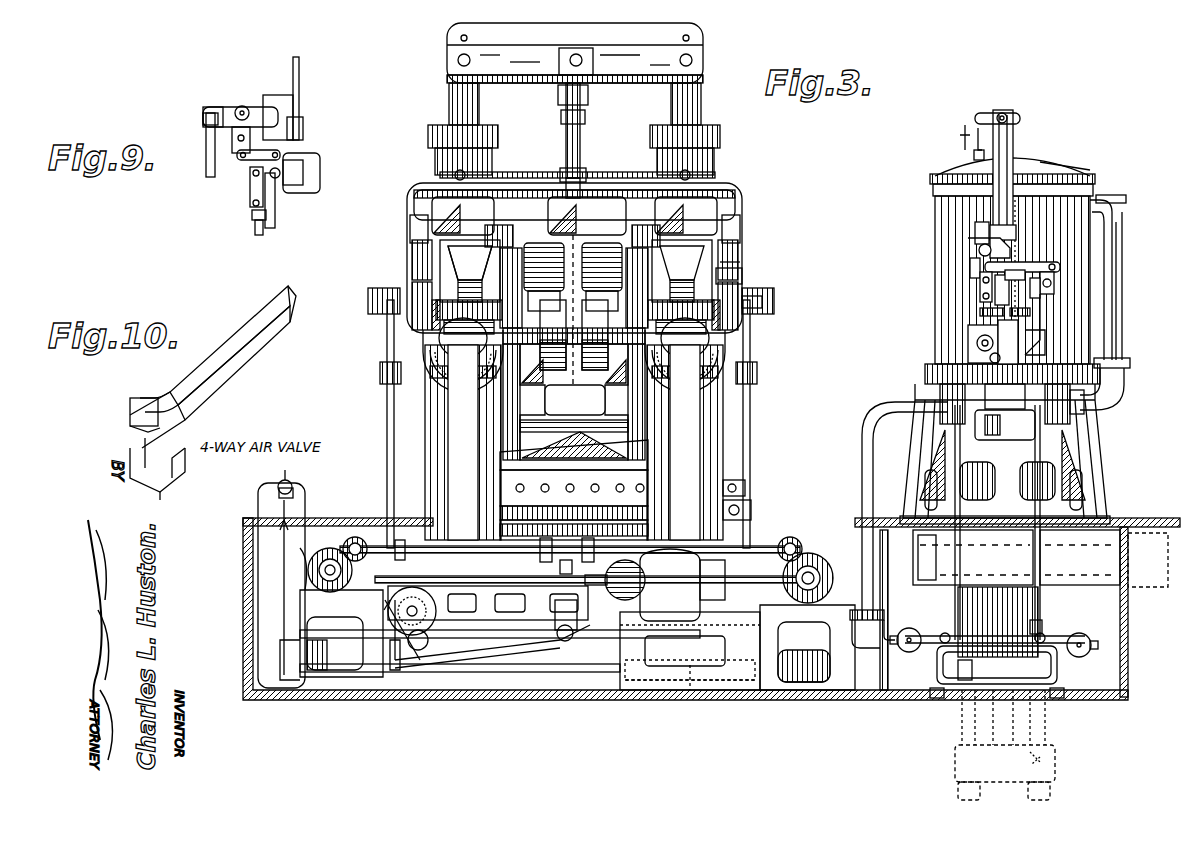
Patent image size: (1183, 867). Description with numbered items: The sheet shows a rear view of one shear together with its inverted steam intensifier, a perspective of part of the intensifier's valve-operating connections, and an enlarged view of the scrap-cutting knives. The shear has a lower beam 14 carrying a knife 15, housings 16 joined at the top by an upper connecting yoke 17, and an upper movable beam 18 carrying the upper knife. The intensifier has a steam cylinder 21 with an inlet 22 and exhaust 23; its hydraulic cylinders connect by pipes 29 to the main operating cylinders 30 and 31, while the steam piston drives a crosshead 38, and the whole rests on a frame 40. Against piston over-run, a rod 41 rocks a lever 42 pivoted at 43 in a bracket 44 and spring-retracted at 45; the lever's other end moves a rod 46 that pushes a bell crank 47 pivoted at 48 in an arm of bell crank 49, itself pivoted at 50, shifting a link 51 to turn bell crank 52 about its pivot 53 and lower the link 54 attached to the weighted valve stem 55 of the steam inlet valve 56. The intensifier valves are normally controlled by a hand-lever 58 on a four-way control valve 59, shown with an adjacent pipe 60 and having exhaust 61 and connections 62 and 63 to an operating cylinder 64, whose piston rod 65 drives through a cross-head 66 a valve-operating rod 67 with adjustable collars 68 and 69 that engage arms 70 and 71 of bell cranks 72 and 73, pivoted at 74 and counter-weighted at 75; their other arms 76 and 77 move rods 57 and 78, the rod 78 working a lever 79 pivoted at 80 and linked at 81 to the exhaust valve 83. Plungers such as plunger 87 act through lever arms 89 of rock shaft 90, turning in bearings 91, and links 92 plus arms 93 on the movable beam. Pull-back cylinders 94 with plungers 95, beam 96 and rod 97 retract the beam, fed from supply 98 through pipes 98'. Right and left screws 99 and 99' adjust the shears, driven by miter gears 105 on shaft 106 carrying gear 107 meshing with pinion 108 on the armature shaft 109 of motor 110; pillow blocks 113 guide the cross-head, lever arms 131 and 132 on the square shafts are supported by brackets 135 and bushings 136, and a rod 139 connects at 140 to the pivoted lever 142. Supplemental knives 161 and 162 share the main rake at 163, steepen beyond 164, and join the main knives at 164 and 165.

In FIG. 3, the lower beam 14 is at (574, 494).
In FIG. 10, the knife 15 is at (222, 406).
In FIG. 3, the housings 16 is at (574, 442).
In FIG. 3, the upper connecting yoke 17 is at (742, 205).
In FIG. 3, the upper movable beam 18 is at (574, 394).
In FIG. 3, the steam cylinder 21 is at (1095, 192).
In FIG. 3, the inlet 22 is at (968, 345).
In FIG. 3, the exhaust 23 is at (996, 458).
In FIG. 3, the pipes 29 is at (470, 538).
In FIG. 3, the main operating cylinder 30 is at (435, 350).
In FIG. 3, the main operating cylinder 31 is at (700, 360).
In FIG. 3, the crosshead 38 is at (1005, 772).
In FIG. 3, the frame 40 is at (1097, 462).
In FIG. 3, the rod 41 is at (975, 145).
In FIG. 3, the lever 42 is at (996, 113).
In FIG. 3, the pivot 43 is at (1010, 110).
In FIG. 3, the bracket 44 is at (1013, 152).
In FIG. 3, the spring retraction 45 is at (960, 138).
In FIG. 3, the rod 46 is at (1020, 165).
In FIG. 9, the rod 46 is at (300, 70).
In FIG. 3, the bell crank 47 is at (968, 242).
In FIG. 9, the bell crank 47 is at (278, 150).
In FIG. 3, the pivot 48 is at (970, 268).
In FIG. 9, the pivot 48 is at (236, 150).
In FIG. 3, the bell crank 49 is at (978, 250).
In FIG. 9, the bell crank 49 is at (225, 107).
In FIG. 3, the pivot 50 is at (975, 232).
In FIG. 9, the pivot 50 is at (242, 106).
In FIG. 3, the link 51 is at (1025, 262).
In FIG. 9, the link 51 is at (255, 160).
In FIG. 3, the bell crank 52 is at (1090, 285).
In FIG. 9, the bell crank 52 is at (280, 178).
In FIG. 3, the pivot 53 is at (1007, 287).
In FIG. 9, the pivot 53 is at (273, 228).
In FIG. 3, the link 54 is at (980, 292).
In FIG. 9, the link 54 is at (256, 195).
In FIG. 3, the weighted valve stem 55 is at (975, 325).
In FIG. 9, the weighted valve stem 55 is at (258, 237).
In FIG. 3, the steam inlet valve 56 is at (975, 365).
In FIG. 3, the rod 57 is at (952, 560).
In FIG. 9, the rod 57 is at (210, 170).
In FIG. 3, the hand-lever 58 is at (232, 476).
In FIG. 3, the four-way control valve 59 is at (276, 486).
In FIG. 3, the air pipe 60 is at (295, 497).
In FIG. 3, the exhaust 61 is at (292, 475).
In FIG. 3, the connection 62 is at (262, 540).
In FIG. 3, the connection 63 is at (305, 555).
In FIG. 3, the operating cylinder 64 is at (460, 645).
In FIG. 3, the piston rod 65 is at (500, 674).
In FIG. 3, the cross-head 66 is at (735, 300).
In FIG. 3, the valve-operating rod 67 is at (680, 665).
In FIG. 3, the adjustable collar 68 is at (962, 680).
In FIG. 3, the adjustable collar 69 is at (1029, 717).
In FIG. 3, the arm 70 is at (928, 692).
In FIG. 3, the arm 71 is at (1060, 692).
In FIG. 3, the bell crank 72 is at (935, 660).
In FIG. 3, the bell crank 73 is at (981, 717).
In FIG. 3, the pivot 74 is at (945, 633).
In FIG. 3, the counter-weight 75 is at (1092, 660).
In FIG. 3, the arm 76 is at (948, 633).
In FIG. 3, the arm 77 is at (1045, 625).
In FIG. 3, the rod 78 is at (1040, 560).
In FIG. 3, the lever 79 is at (1035, 296).
In FIG. 3, the pivot 80 is at (1032, 320).
In FIG. 3, the link 81 is at (1046, 345).
In FIG. 3, the exhaust valve 83 is at (1100, 402).
In FIG. 3, the plunger 87 is at (440, 310).
In FIG. 3, the lever arms 89 is at (440, 252).
In FIG. 3, the rock shaft 90 is at (740, 266).
In FIG. 3, the bearings 91 is at (436, 280).
In FIG. 3, the links 92 is at (565, 300).
In FIG. 3, the arms 93 is at (573, 277).
In FIG. 3, the pull-back cylinders 94 is at (492, 157).
In FIG. 3, the plungers 95 is at (478, 112).
In FIG. 3, the beam 96 is at (631, 62).
In FIG. 3, the rod 97 is at (580, 140).
In FIG. 3, the fluid supply 98 is at (587, 289).
In FIG. 3, the pipes 98' is at (577, 150).
In FIG. 3, the right screw 99 is at (807, 608).
In FIG. 3, the left screw 99' is at (341, 612).
In FIG. 3, the miter gears 105 is at (352, 540).
In FIG. 3, the shaft 106 is at (575, 584).
In FIG. 3, the gear 107 is at (612, 592).
In FIG. 3, the pinion 108 is at (690, 651).
In FIG. 3, the armature shaft 109 is at (690, 580).
In FIG. 3, the motor 110 is at (670, 585).
In FIG. 3, the pillow blocks 113 is at (548, 655).
In FIG. 3, the lever arm 131 is at (720, 652).
In FIG. 3, the lever arm 132 is at (398, 650).
In FIG. 3, the brackets 135 is at (406, 634).
In FIG. 3, the flanged bushings 136 is at (433, 611).
In FIG. 3, the rod 139 is at (387, 418).
In FIG. 3, the connection 140 is at (375, 314).
In FIG. 3, the pivoted lever 142 is at (780, 298).
In FIG. 10, the supplemental knife 161 is at (145, 478).
In FIG. 10, the supplemental knife 162 is at (130, 415).
In FIG. 10, the initial slope 163 is at (135, 430).
In FIG. 10, the point of increased slope / joint 164 is at (180, 470).
In FIG. 10, the joint 165 is at (150, 395).